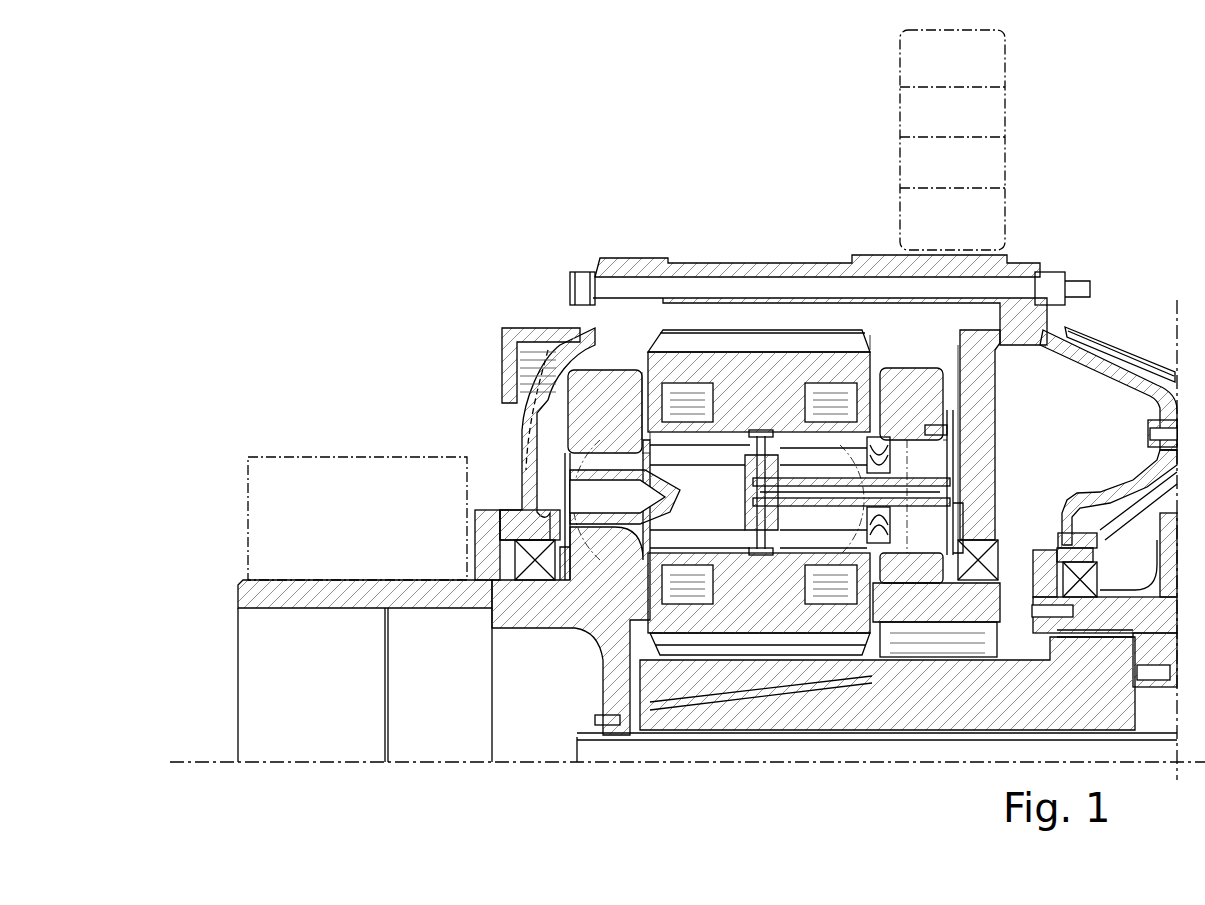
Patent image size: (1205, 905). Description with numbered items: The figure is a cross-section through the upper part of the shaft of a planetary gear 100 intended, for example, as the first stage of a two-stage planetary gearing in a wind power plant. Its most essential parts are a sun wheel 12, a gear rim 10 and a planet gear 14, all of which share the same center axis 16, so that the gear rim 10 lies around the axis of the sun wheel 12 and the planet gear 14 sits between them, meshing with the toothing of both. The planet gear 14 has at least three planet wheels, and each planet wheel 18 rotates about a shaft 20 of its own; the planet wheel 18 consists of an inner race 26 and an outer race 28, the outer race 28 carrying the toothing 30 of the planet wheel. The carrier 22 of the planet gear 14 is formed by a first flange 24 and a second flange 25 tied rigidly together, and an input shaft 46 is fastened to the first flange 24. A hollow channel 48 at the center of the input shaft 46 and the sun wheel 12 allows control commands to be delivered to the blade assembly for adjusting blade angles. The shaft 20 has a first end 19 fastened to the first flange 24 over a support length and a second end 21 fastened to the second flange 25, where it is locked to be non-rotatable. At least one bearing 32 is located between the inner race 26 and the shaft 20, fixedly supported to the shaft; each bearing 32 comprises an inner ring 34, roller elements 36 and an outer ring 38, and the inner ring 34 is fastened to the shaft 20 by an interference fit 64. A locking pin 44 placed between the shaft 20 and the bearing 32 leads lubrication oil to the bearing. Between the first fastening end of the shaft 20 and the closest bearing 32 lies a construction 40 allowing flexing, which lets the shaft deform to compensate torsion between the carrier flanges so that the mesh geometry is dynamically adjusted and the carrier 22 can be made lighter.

The planetary gear 100 is at (718, 100).
The gear rim 10 is at (687, 313).
The sun wheel 12 is at (960, 709).
The planet gear 14 is at (588, 362).
The center axis 16 is at (618, 764).
The planet wheel 18 is at (772, 388).
The first end 19 is at (562, 493).
The shaft 20 is at (720, 476).
The second end 21 is at (960, 548).
The carrier 22 is at (622, 347).
The first flange 24 is at (605, 411).
The second flange 25 is at (911, 475).
The inner race 26 is at (790, 398).
The outer race 28 is at (874, 331).
The toothing 30 is at (966, 382).
The bearing 32 is at (624, 390).
The inner ring 34 is at (930, 428).
The roller elements 36 is at (662, 397).
The outer ring 38 is at (838, 373).
The construction allowing flexing 40 is at (596, 464).
The locking pin 44 is at (770, 432).
The input shaft 46 is at (350, 597).
The hollow channel 48 is at (468, 753).
The interference fit 64 is at (638, 433).